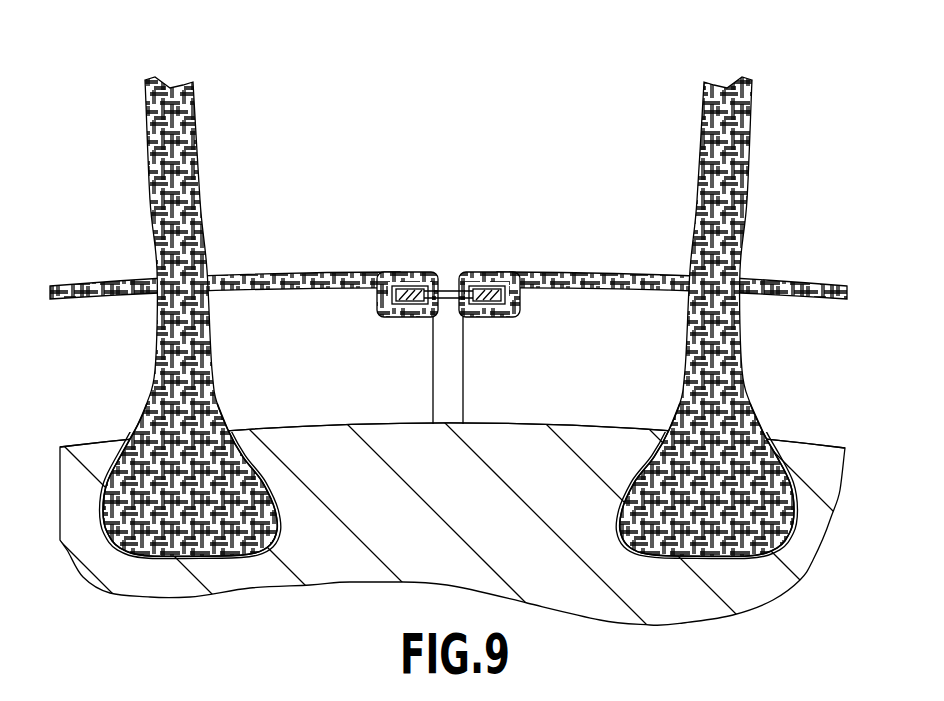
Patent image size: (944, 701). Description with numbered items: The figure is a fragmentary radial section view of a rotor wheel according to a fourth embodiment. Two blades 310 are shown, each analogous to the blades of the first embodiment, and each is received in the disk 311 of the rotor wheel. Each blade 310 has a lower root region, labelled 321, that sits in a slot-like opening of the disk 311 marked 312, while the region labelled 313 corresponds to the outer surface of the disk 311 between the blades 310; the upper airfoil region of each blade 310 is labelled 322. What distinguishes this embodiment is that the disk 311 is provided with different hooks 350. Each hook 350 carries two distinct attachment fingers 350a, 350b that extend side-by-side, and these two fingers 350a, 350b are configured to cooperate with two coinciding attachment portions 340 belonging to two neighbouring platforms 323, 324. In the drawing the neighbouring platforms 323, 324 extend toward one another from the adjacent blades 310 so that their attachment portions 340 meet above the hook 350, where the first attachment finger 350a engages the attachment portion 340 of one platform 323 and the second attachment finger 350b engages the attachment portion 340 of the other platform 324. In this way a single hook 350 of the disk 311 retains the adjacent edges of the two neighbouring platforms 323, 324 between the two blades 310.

The blade 310 is at (447, 289).
The disk 311 is at (425, 541).
The disk slot 312 is at (276, 530).
The disk outer surface 313 is at (92, 445).
The blade root 321 is at (208, 470).
The airfoil 322 is at (168, 127).
The platform 323 is at (288, 273).
The platform 324 is at (101, 278).
The attachment portion 340 is at (370, 308).
The hook 350 is at (426, 345).
The attachment finger 350a is at (402, 272).
The attachment finger 350b is at (495, 272).